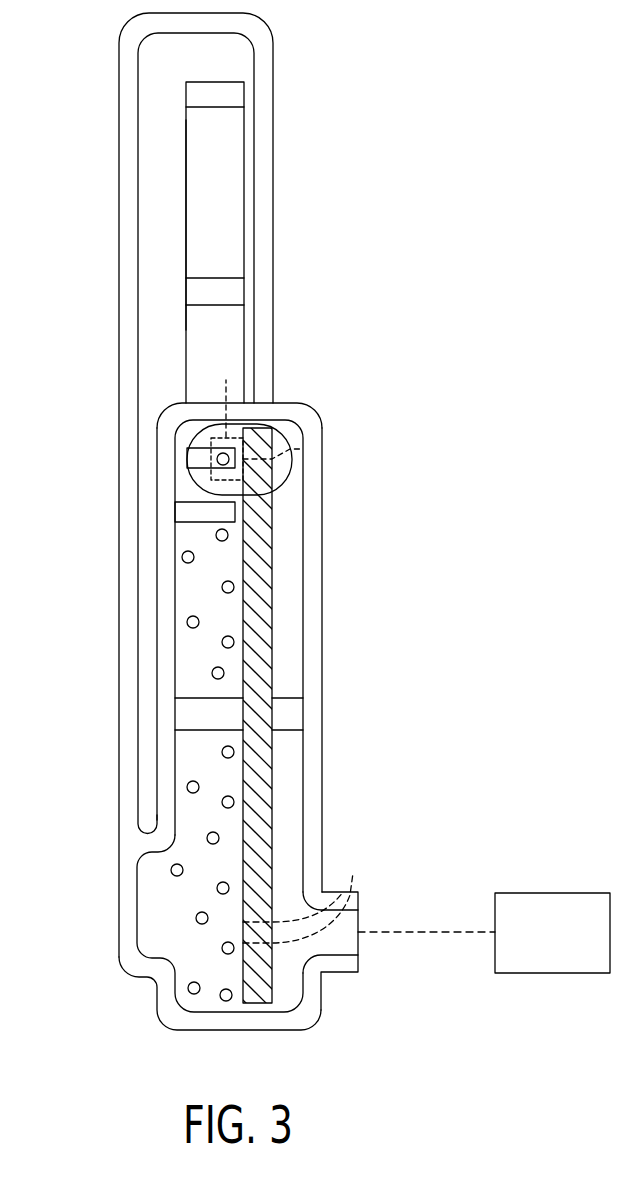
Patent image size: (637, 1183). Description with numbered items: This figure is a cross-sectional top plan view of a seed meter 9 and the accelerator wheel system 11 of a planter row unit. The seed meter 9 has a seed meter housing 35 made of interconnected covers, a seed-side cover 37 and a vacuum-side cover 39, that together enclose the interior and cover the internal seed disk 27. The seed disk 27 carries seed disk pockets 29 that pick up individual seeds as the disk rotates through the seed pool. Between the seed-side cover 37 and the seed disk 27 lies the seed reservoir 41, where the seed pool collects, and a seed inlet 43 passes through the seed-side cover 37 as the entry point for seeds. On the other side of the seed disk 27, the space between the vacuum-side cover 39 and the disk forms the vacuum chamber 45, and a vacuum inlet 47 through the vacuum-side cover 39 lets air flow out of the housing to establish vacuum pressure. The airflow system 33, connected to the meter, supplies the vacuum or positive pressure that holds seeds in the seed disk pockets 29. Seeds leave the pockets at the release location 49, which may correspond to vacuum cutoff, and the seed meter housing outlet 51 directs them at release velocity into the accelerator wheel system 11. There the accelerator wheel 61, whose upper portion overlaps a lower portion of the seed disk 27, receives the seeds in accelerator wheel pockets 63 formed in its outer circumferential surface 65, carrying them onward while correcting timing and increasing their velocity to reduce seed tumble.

The seed meter 9 is at (355, 557).
The accelerator wheel system 11 is at (100, 268).
The seed disk 27 is at (278, 632).
The seed disk pockets 29 is at (300, 449).
The airflow system 33 is at (553, 892).
The seed meter housing 35 is at (255, 1033).
The seed-side cover 37 is at (158, 753).
The vacuum-side cover 39 is at (317, 808).
The seed reservoir 41 is at (212, 960).
The seed inlet 43 is at (150, 938).
The vacuum chamber 45 is at (287, 770).
The vacuum inlet 47 is at (335, 943).
The release location 49 is at (226, 400).
The seed meter housing outlet 51 is at (198, 480).
The accelerator wheel 61 is at (185, 200).
The accelerator wheel pockets 63 is at (233, 97).
The outer circumferential surface 65 is at (215, 197).